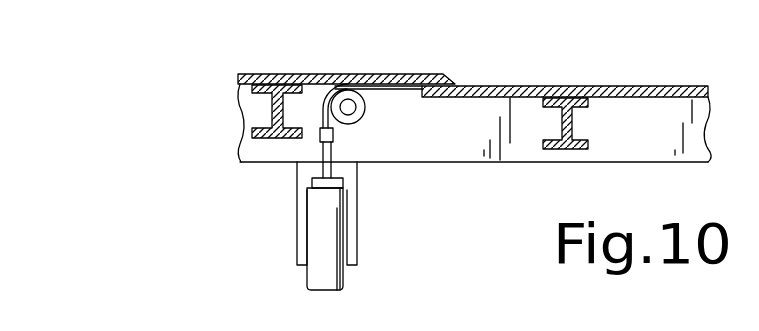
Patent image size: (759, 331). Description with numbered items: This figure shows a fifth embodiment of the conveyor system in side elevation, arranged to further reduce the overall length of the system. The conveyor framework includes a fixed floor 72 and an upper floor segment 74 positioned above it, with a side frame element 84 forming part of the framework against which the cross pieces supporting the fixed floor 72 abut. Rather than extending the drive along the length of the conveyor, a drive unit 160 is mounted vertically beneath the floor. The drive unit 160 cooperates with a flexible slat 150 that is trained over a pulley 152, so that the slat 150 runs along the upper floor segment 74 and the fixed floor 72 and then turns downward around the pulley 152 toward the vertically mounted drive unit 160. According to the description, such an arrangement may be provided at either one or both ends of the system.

The fixed floor 72 is at (596, 105).
The upper floor segment 74 is at (333, 73).
The side frame element 84 is at (521, 141).
The flexible slat 150 is at (657, 84).
The pulley 152 is at (363, 118).
The drive unit 160 is at (345, 198).